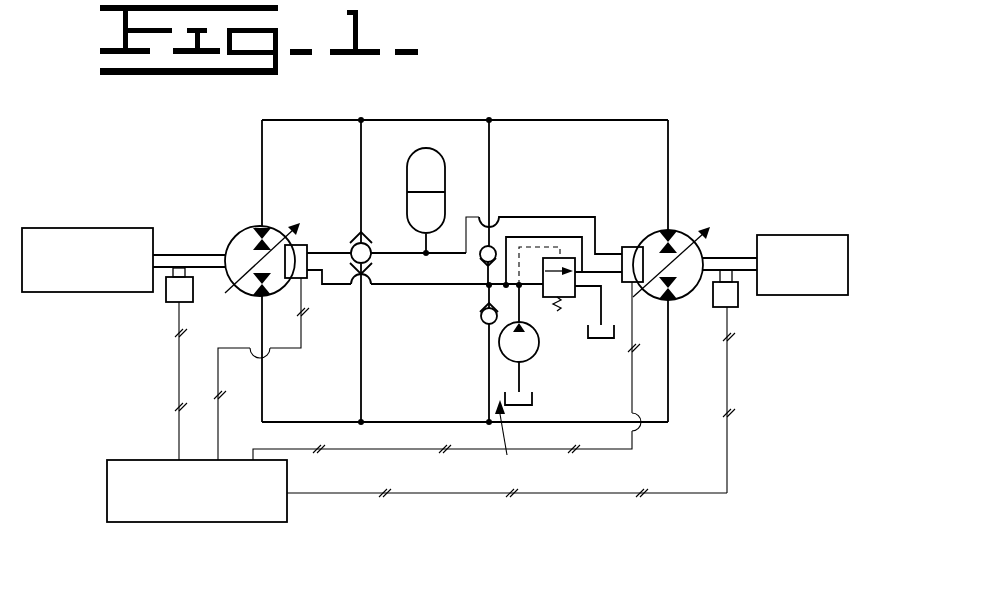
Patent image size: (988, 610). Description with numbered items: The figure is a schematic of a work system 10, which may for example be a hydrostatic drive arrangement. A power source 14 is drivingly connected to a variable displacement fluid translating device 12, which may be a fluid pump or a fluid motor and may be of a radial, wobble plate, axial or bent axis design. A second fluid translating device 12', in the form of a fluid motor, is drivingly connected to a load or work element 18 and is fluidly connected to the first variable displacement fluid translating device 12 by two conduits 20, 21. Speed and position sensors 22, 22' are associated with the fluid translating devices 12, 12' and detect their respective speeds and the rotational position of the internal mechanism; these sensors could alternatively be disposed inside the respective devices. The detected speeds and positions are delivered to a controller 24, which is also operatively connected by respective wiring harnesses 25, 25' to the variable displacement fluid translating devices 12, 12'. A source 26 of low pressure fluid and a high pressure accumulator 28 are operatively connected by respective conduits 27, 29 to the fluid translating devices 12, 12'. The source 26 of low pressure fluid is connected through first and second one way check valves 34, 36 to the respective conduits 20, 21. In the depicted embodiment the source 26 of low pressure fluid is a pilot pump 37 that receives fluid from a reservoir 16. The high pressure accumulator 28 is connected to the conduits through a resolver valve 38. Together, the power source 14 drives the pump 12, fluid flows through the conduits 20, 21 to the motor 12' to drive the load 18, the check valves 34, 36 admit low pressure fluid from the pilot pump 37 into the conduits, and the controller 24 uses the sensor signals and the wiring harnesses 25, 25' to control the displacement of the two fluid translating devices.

The work system 10 is at (134, 170).
The variable displacement fluid translating device 12 is at (226, 271).
The second fluid translating device 12' is at (689, 271).
The power source 14 is at (85, 228).
The reservoir 16 is at (532, 395).
The load or work element 18 is at (809, 197).
The conduit 20 is at (433, 118).
The conduit 21 is at (438, 422).
The speed and position sensor 22 is at (151, 364).
The speed and position sensor 22' is at (755, 381).
The controller 24 is at (107, 492).
The wiring harness 25 is at (272, 369).
The wiring harness 25' is at (472, 377).
The source of low pressure fluid 26 is at (509, 442).
The conduit 27 is at (427, 285).
The high pressure accumulator 28 is at (412, 155).
The conduit 29 is at (327, 248).
The first one way check valve 34 is at (480, 248).
The second one way check valve 36 is at (482, 318).
The pilot pump 37 is at (538, 363).
The resolver valve 38 is at (377, 257).